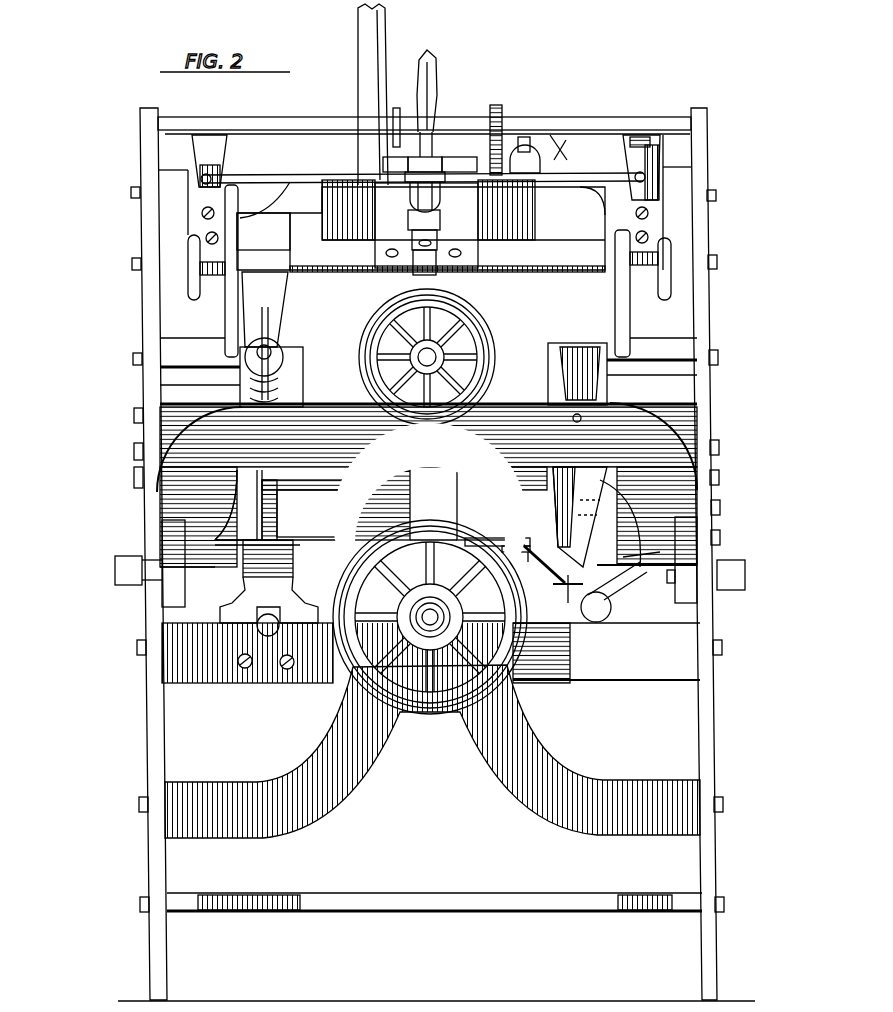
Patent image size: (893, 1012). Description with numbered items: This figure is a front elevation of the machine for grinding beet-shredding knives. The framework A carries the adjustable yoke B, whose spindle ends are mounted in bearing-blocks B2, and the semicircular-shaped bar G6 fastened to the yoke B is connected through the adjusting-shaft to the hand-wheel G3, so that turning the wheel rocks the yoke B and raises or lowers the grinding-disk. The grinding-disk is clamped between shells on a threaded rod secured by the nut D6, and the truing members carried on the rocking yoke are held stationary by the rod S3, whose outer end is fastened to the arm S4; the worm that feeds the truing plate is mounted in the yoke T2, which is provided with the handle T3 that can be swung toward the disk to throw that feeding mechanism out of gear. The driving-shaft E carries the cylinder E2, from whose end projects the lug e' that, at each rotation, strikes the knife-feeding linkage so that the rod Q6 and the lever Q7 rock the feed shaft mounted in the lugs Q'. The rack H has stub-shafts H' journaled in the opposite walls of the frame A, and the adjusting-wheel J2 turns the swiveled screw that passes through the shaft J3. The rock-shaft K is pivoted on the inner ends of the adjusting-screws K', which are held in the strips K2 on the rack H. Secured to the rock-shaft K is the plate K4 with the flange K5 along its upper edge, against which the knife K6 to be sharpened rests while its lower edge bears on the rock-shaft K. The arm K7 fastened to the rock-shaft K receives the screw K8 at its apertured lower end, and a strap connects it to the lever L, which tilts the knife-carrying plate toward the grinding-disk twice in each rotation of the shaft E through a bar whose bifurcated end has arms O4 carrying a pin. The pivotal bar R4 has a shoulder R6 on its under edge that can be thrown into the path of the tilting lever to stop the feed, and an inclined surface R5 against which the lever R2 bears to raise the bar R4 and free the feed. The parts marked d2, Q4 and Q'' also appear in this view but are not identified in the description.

The framework A is at (160, 860).
The adjustable yoke B is at (570, 157).
The bearing-blocks B2 is at (175, 203).
The nut D6 is at (430, 130).
The vertical column d2 is at (378, 43).
The yoke T2 is at (396, 110).
The handle T3 is at (430, 52).
The rod S3 is at (600, 175).
The arm S4 is at (208, 157).
The rock-shaft K is at (421, 227).
The adjusting-screws K' is at (418, 262).
The strips K2 is at (228, 300).
The plate K4 is at (304, 197).
The flange K5 is at (298, 180).
The knife to be sharpened K6 is at (347, 197).
The arm K7 is at (276, 278).
The screw K8 is at (278, 347).
The lugs Q' is at (437, 242).
The bracket Q4 is at (240, 610).
The rod Q6 is at (550, 540).
The lever Q7 is at (570, 367).
The rod Q'' is at (544, 568).
The rack H is at (427, 425).
The stub-shafts H' is at (427, 563).
The adjusting-wheel J2 is at (431, 354).
The shaft J3 is at (680, 350).
The lever L is at (267, 503).
The shaft E is at (325, 492).
The cylinder E2 is at (502, 503).
The semicircular-shaped bar G6 is at (418, 472).
The hand-wheel G3 is at (440, 700).
The lug e' is at (497, 529).
The lever R2 is at (612, 600).
The bar R4 is at (650, 540).
The inclined surface R5 is at (623, 557).
The shoulder R6 is at (567, 585).
The arms O4 is at (267, 680).